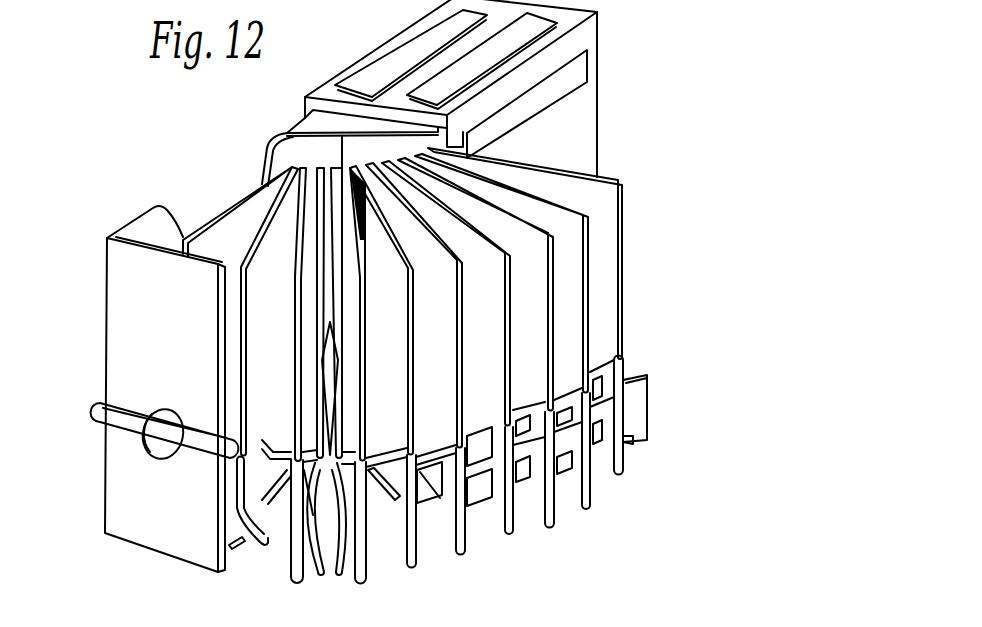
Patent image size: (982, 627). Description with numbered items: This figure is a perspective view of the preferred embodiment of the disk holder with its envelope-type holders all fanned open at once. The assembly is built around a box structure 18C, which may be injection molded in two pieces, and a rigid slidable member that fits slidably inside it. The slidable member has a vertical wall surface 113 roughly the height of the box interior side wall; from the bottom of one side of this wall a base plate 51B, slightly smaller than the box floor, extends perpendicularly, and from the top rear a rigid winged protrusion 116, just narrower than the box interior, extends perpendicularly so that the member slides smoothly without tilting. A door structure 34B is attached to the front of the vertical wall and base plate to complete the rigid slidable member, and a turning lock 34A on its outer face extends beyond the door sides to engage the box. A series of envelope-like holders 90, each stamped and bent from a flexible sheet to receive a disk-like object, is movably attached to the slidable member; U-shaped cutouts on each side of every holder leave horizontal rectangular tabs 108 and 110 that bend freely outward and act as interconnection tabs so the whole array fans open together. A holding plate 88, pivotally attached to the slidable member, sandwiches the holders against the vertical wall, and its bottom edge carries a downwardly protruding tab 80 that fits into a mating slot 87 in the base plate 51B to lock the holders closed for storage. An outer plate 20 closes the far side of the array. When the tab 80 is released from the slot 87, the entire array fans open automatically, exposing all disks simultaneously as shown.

The box structure 18C is at (592, 5).
The rigid winged protrusion 116 is at (320, 128).
The vertical wall surface 113 is at (280, 153).
The plate 20 is at (590, 242).
The envelope-like holders 90 is at (618, 356).
The holding plate 88 is at (633, 398).
The downwardly protruding tab 80 is at (630, 447).
The door structure 34B is at (113, 298).
The latch rod 34A is at (98, 418).
The mating slot 87 is at (233, 528).
The base plate 51B is at (252, 548).
The rectangular tab 110 is at (317, 574).
The rectangular tab 108 is at (377, 505).